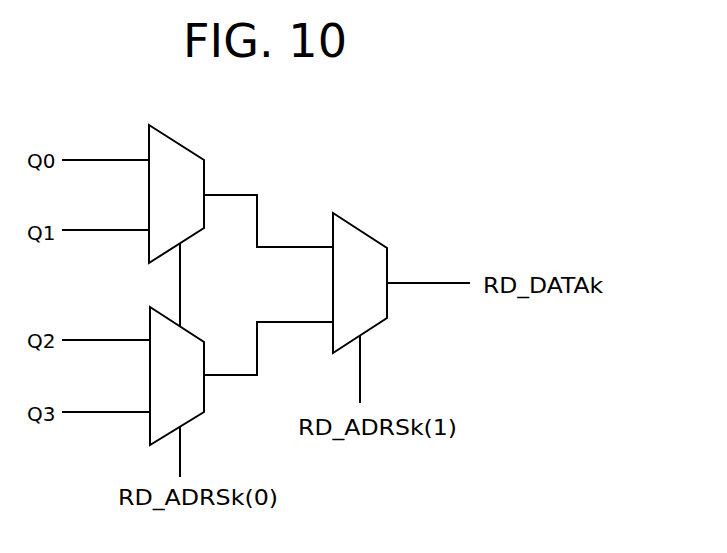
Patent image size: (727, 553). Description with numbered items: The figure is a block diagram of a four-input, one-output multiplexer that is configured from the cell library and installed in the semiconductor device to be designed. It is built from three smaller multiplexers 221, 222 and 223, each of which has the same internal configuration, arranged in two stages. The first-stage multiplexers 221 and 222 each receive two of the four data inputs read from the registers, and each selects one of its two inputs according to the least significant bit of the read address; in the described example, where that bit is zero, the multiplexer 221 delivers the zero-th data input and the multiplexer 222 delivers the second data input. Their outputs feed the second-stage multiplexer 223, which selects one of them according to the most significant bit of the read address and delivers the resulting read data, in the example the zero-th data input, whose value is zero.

The first-stage multiplexer 221 is at (185, 143).
The first-stage multiplexer 222 is at (191, 330).
The second-stage multiplexer 223 is at (366, 231).